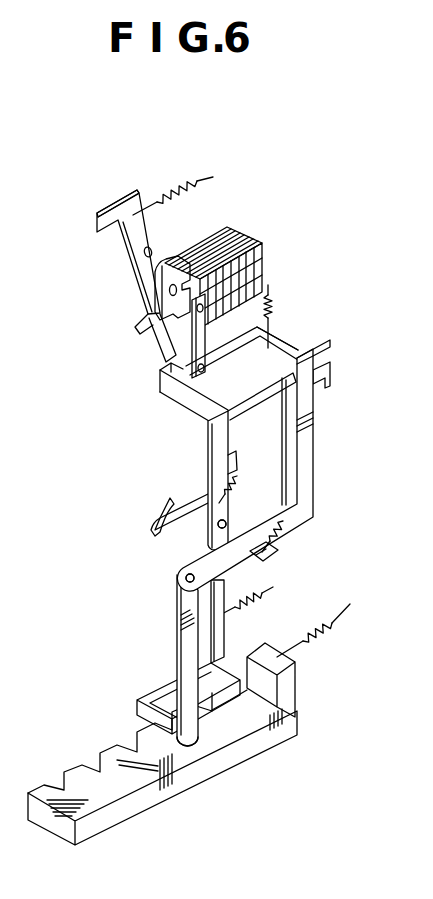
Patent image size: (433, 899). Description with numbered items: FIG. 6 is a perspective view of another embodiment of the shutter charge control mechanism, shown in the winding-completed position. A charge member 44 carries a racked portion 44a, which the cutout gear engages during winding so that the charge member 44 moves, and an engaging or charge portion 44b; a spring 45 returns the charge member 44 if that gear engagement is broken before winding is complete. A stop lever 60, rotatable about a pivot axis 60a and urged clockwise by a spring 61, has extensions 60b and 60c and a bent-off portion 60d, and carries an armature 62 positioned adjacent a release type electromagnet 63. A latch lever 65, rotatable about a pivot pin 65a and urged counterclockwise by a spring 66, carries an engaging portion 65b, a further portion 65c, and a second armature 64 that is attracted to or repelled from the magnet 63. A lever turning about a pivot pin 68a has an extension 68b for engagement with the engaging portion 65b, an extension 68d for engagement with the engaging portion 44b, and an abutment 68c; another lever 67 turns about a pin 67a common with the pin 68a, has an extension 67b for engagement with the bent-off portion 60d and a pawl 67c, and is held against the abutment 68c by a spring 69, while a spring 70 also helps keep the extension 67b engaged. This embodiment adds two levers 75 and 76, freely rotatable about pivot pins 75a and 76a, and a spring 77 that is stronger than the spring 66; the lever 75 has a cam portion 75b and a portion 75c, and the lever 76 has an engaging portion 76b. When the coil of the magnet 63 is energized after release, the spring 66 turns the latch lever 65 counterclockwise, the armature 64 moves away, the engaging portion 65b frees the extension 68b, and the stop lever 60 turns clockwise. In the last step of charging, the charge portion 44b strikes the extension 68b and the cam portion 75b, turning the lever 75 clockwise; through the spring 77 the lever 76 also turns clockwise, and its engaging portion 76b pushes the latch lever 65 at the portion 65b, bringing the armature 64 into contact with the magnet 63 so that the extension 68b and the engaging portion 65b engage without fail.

The charge member 44 is at (140, 800).
The racked portion 44a is at (73, 770).
The engaging portion 44b is at (285, 687).
The spring 45 is at (337, 625).
The stop lever 60 is at (166, 206).
The pivot axis 60a is at (153, 251).
The extension 60b is at (122, 193).
The extension 60c is at (137, 325).
The bent-off portion 60d is at (165, 361).
The spring 61 is at (180, 180).
The armature 62 is at (158, 273).
The release type electromagnet 63 is at (232, 232).
The armature 64 is at (258, 246).
The latch lever 65 is at (246, 344).
The pivot pin 65a is at (206, 370).
The engaging portion 65b is at (278, 336).
The frame tab 65c is at (320, 390).
The spring 66 is at (276, 293).
The lever 67 is at (188, 402).
The pin 67a is at (282, 508).
The extension 67b is at (162, 382).
The pawl 67c is at (152, 503).
The pivot pin 68a is at (222, 524).
The extension 68b is at (287, 384).
The abutment 68c is at (221, 453).
The extension 68d is at (140, 716).
The spring 69 is at (242, 480).
The spring 70 is at (257, 605).
The lever 75 is at (178, 628).
The pivot pin 75a is at (180, 579).
The cam portion 75b is at (198, 724).
The tab 75c is at (276, 566).
The lever 76 is at (314, 463).
The pivot pin 76a is at (190, 578).
The engaging portion 76b is at (322, 349).
The spring 77 is at (283, 540).